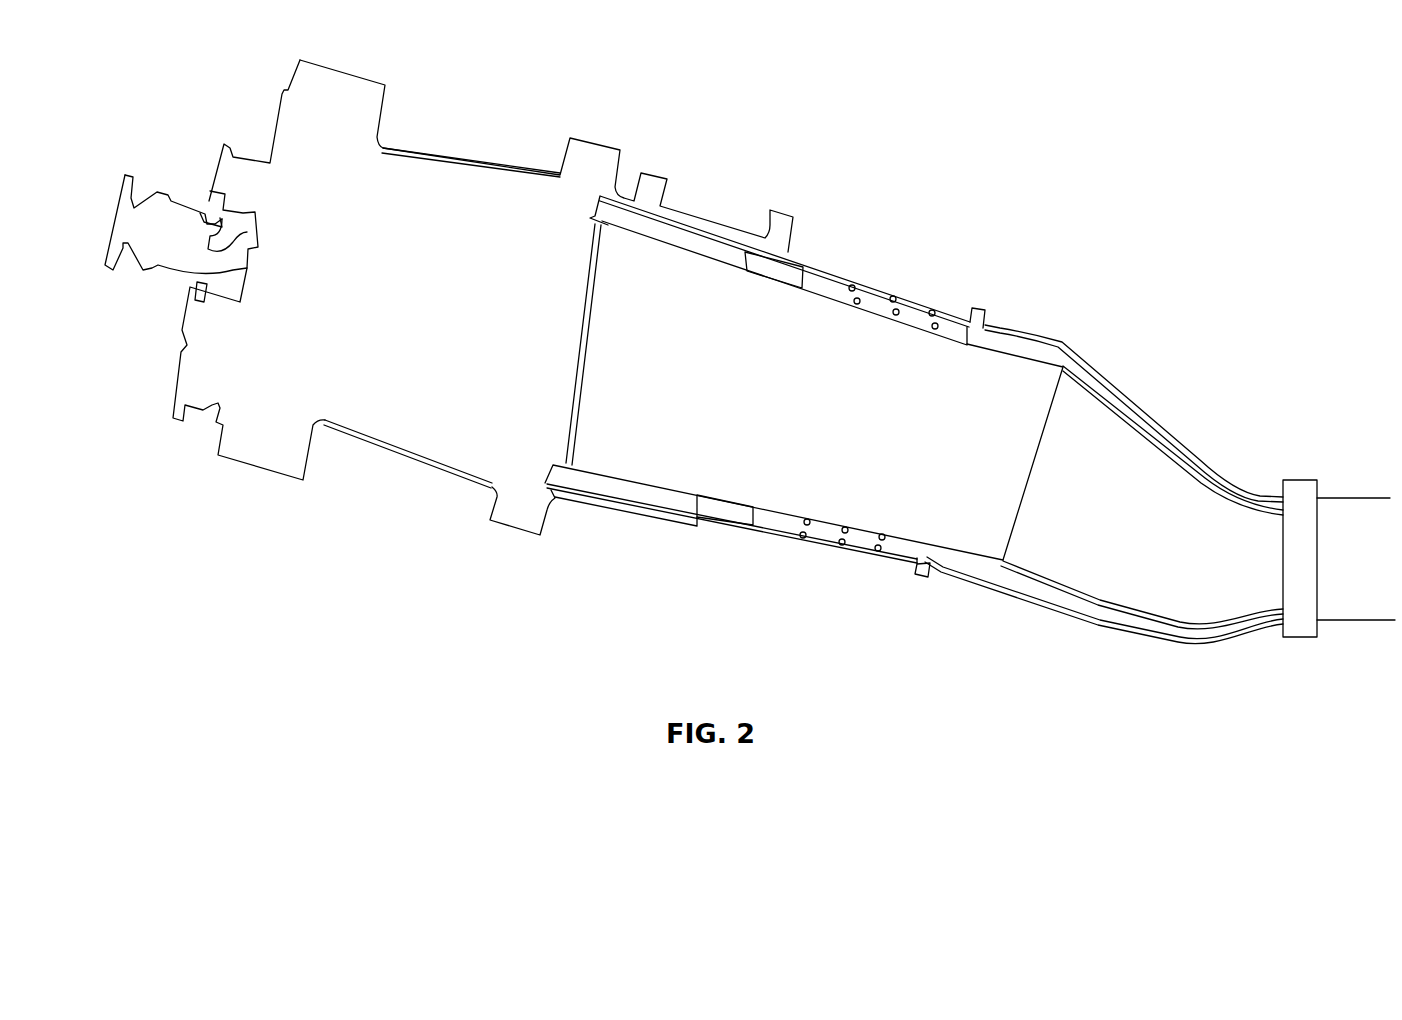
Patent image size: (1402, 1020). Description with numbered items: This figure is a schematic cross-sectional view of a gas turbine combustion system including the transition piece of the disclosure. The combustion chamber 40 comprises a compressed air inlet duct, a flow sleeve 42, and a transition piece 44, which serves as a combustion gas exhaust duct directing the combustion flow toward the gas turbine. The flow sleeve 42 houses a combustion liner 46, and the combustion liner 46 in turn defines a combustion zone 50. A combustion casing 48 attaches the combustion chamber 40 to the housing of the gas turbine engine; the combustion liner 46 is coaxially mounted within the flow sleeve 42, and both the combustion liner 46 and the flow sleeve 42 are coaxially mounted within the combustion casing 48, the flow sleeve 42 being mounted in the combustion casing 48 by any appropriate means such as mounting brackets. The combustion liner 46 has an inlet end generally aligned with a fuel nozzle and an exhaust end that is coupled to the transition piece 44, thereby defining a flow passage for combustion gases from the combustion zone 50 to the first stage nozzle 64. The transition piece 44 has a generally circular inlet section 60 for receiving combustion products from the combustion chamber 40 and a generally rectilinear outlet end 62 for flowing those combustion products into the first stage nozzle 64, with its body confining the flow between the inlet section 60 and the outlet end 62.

The combustion chamber 40 is at (410, 493).
The flow sleeve 42 is at (688, 237).
The transition piece 44 is at (1125, 486).
The combustion liner 46 is at (758, 282).
The combustion casing 48 is at (458, 152).
The combustion zone 50 is at (702, 344).
The inlet section 60 is at (1046, 417).
The outlet end 62 is at (1305, 548).
The first stage nozzle 64 is at (1363, 602).